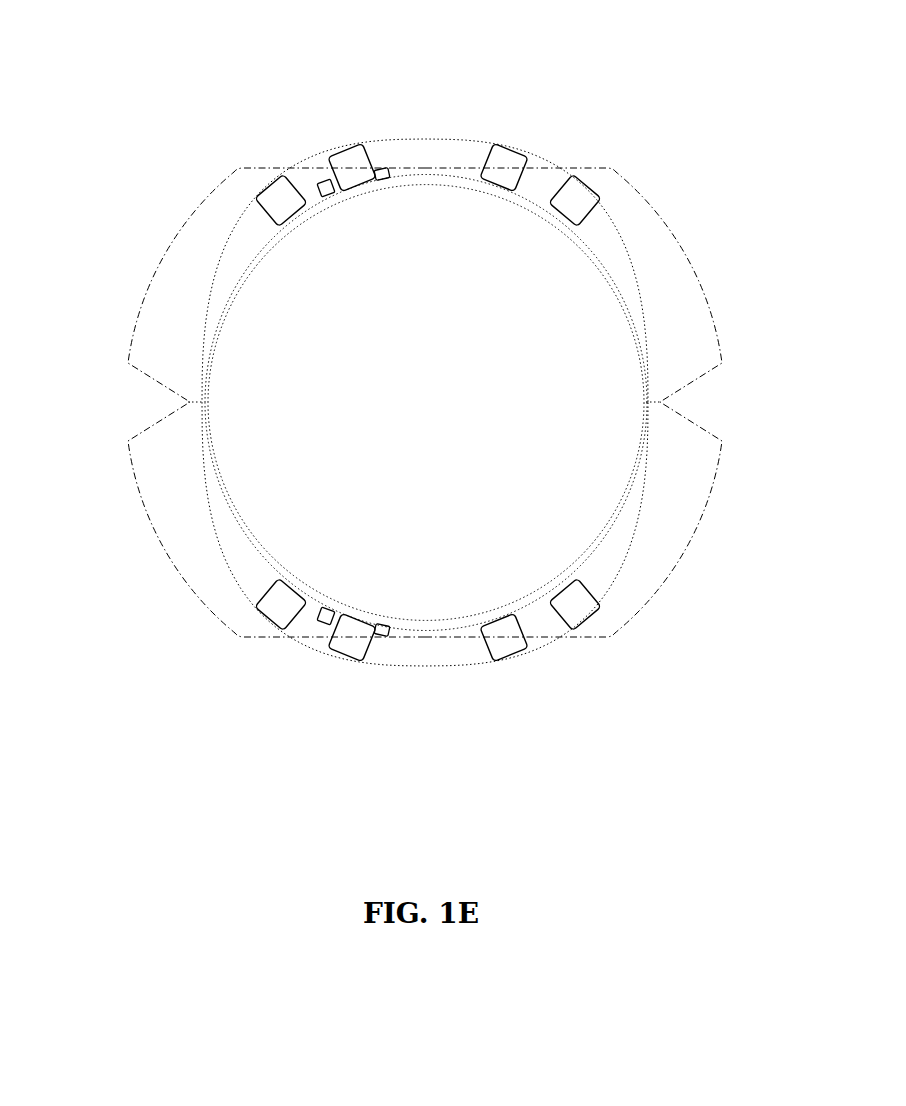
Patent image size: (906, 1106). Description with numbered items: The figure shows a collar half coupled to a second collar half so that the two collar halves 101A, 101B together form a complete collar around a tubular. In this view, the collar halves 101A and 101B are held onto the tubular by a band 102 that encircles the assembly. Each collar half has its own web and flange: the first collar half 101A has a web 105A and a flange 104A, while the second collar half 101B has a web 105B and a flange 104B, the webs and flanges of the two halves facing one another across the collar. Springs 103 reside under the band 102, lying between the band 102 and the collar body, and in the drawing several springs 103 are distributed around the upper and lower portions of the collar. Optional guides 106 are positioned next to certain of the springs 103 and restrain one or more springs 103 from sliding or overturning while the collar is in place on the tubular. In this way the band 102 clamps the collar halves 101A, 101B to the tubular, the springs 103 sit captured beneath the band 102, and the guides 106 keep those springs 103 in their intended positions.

The collar half 101A is at (152, 116).
The collar half 101B is at (247, 576).
The band 102 is at (389, 136).
The springs 103 is at (346, 149).
The flange 104A is at (694, 256).
The flange 104B is at (673, 579).
The web 105A is at (432, 171).
The web 105B is at (427, 638).
The guides 106 is at (378, 183).